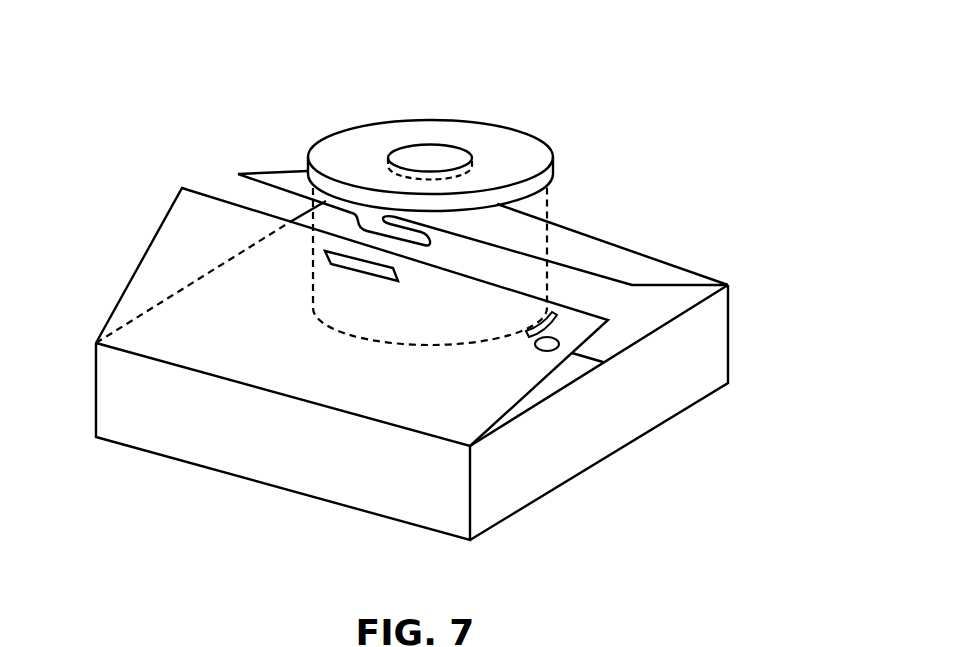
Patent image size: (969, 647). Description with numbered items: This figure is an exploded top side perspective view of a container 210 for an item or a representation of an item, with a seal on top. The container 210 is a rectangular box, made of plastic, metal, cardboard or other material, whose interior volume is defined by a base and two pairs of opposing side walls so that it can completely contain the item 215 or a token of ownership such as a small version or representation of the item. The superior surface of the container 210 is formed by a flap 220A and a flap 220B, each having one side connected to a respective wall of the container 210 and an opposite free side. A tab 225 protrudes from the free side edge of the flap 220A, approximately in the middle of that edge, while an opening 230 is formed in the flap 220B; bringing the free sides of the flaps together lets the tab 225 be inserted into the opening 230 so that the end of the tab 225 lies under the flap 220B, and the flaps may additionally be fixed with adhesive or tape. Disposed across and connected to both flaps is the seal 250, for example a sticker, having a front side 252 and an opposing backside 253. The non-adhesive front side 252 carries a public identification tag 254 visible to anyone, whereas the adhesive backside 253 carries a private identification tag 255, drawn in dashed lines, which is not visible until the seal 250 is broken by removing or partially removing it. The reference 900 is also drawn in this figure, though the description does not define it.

The container 210 is at (730, 311).
The item 215 is at (578, 326).
The flap 220A is at (605, 265).
The flap 220B is at (202, 260).
The tab 225 is at (428, 243).
The opening 230 is at (399, 291).
The seal 250 is at (447, 118).
The front side 252 is at (516, 148).
The backside 253 is at (522, 207).
The public identification tag 254 is at (432, 146).
The private identification tag 255 is at (474, 165).
The raised ridge 900 is at (597, 238).